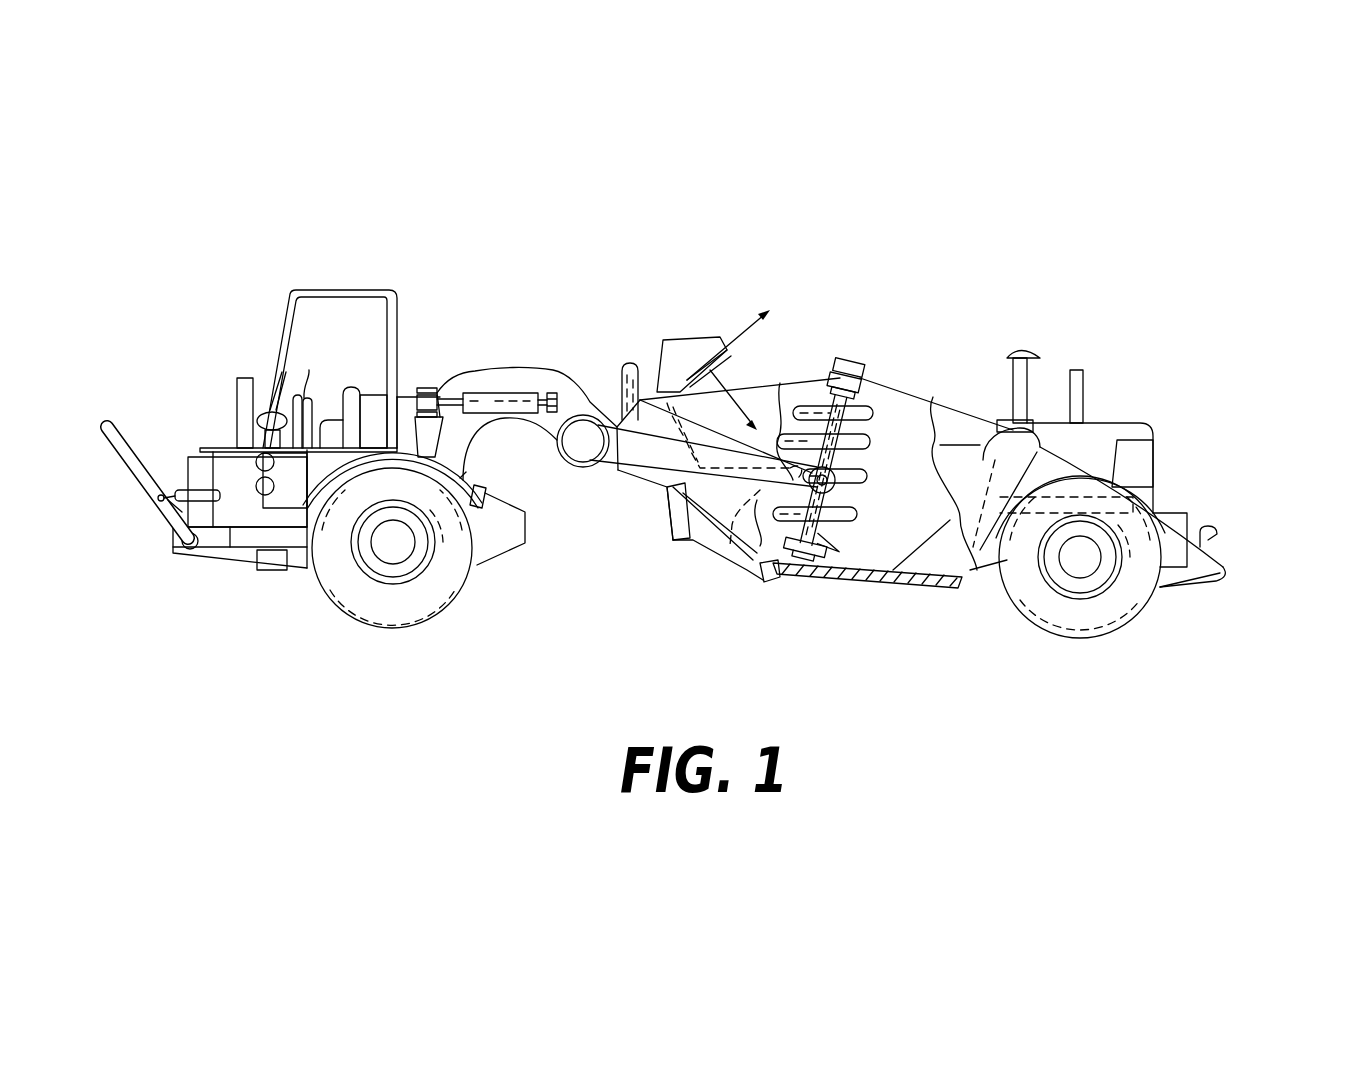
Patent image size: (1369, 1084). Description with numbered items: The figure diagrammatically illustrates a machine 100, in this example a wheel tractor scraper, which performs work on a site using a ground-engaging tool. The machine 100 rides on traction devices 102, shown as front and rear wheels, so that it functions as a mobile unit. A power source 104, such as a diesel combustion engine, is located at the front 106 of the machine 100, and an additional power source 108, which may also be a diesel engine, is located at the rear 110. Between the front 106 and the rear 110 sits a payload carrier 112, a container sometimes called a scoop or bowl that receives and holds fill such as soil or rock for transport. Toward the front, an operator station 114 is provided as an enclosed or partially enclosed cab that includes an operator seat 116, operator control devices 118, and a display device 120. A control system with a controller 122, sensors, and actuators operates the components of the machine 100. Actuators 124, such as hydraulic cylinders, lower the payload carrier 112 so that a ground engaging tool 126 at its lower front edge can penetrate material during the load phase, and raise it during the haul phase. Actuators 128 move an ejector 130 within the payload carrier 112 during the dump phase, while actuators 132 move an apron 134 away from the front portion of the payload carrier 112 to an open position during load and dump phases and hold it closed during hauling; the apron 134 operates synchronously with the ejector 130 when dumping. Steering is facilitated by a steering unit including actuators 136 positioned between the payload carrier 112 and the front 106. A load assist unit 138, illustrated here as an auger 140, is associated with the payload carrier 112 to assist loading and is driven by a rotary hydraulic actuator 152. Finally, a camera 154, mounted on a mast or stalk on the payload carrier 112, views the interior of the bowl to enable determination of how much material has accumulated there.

The machine 100 is at (588, 305).
The traction devices 102 is at (397, 628).
The power source 104 is at (203, 446).
The front 106 is at (142, 547).
The additional power source 108 is at (1117, 423).
The rear 110 is at (1240, 554).
The payload carrier 112 is at (948, 400).
The operator station 114 is at (424, 311).
The operator seat 116 is at (361, 386).
The operator control devices 118 is at (304, 408).
The display device 120 is at (266, 412).
The controller 122 is at (375, 393).
The actuators 124 is at (627, 363).
The ground engaging tool 126 is at (767, 582).
The actuators 128 is at (1107, 497).
The ejector 130 is at (991, 428).
The actuators 132 is at (667, 507).
The apron 134 is at (717, 560).
The actuators 136 is at (508, 393).
The load assist unit 138 is at (812, 334).
The auger 140 is at (880, 402).
The rotary hydraulic actuator 152 is at (838, 358).
The camera 154 is at (707, 333).